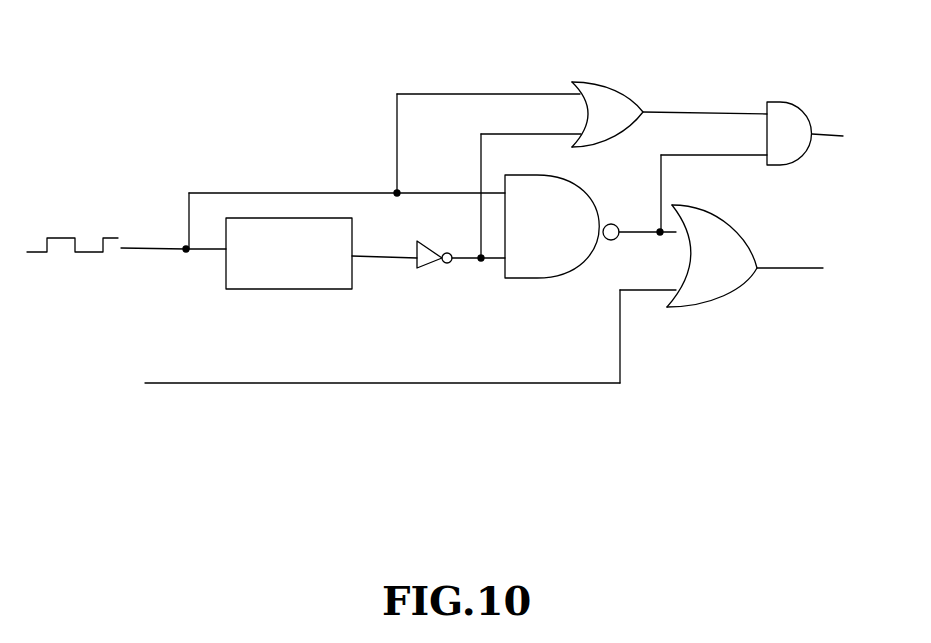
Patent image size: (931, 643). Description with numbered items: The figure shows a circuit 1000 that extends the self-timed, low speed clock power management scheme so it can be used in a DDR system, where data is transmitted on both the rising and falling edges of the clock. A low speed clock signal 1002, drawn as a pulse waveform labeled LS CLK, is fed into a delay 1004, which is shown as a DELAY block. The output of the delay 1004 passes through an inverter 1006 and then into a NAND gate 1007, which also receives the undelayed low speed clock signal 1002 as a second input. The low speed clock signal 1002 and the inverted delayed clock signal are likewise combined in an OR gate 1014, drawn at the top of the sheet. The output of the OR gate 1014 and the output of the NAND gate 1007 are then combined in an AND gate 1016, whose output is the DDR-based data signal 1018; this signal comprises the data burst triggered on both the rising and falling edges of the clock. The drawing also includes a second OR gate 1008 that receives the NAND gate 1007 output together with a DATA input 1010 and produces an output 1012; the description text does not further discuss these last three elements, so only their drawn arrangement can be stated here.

The circuit 1000 is at (161, 62).
The low speed clock signal 1002 is at (108, 242).
The delay 1004 is at (289, 253).
The inverter 1006 is at (434, 243).
The NAND gate 1007 is at (562, 226).
The OR gate 1008 is at (712, 256).
The DATA signal 1010 is at (336, 384).
The output of OR gate 1008 1012 is at (801, 283).
The OR gate 1014 is at (607, 101).
The AND gate 1016 is at (792, 123).
The DDR-based data signal 1018 is at (845, 150).